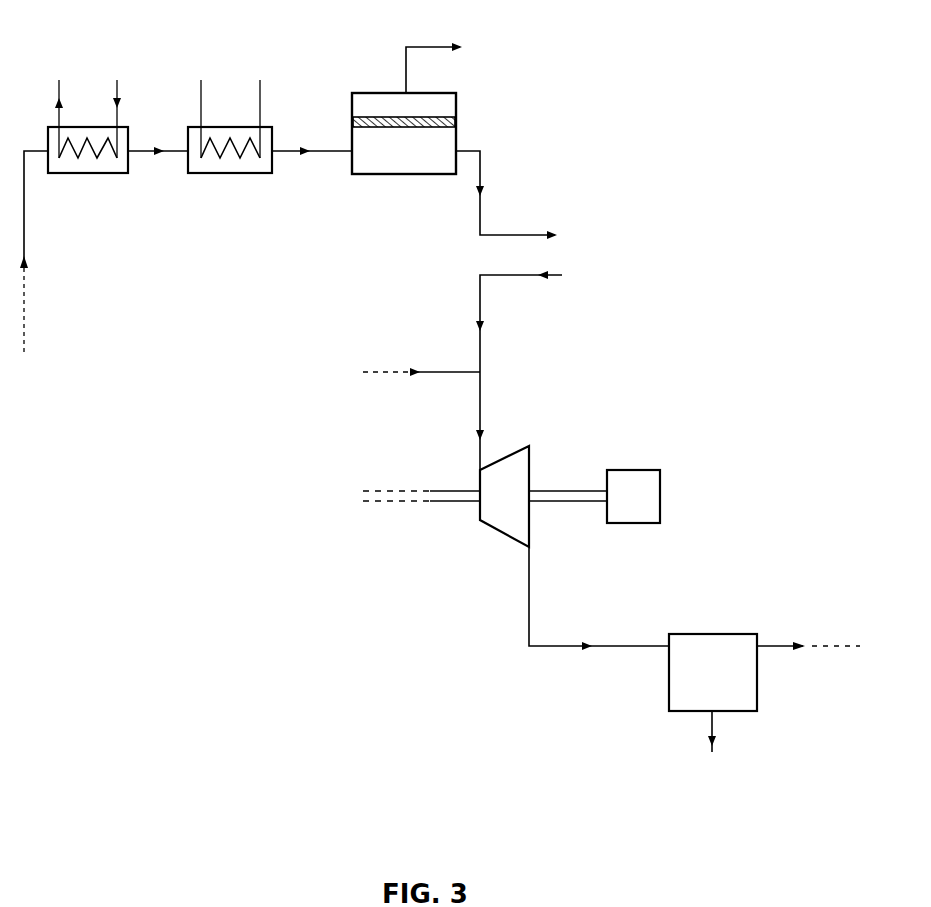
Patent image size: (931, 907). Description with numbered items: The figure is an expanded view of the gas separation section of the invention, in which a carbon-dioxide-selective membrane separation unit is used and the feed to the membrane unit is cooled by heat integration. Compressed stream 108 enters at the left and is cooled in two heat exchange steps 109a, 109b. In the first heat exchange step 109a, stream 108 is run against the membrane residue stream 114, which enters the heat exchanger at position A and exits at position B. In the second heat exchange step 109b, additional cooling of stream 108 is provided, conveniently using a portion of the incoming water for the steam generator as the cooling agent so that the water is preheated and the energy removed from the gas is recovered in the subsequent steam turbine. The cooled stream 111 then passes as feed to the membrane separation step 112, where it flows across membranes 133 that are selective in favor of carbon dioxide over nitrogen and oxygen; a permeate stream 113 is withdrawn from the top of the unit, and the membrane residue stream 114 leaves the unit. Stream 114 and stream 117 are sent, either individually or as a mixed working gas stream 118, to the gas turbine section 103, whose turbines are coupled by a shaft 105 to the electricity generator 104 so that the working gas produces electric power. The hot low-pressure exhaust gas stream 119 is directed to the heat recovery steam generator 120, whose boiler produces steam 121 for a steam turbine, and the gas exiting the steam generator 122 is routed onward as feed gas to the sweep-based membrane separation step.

The gas turbine section 103 is at (484, 523).
The electricity generator 104 is at (636, 470).
The shaft 105 is at (577, 491).
The compressed stream 108 is at (44, 252).
The first heat exchange step 109a is at (87, 173).
The second heat exchange step 109b is at (232, 173).
The cooled stream 111 is at (312, 164).
The membrane separation step 112 is at (378, 174).
The permeate stream 113 is at (456, 64).
The membrane residue stream 114 is at (548, 261).
The stream 117 is at (421, 383).
The mixed working gas stream 118 is at (460, 421).
The low-pressure exhaust gas stream 119 is at (599, 612).
The heat recovery steam generator 120 is at (692, 634).
The steam 121 is at (712, 745).
The gas exiting the steam generator 122 is at (808, 659).
The membranes 133 is at (456, 122).